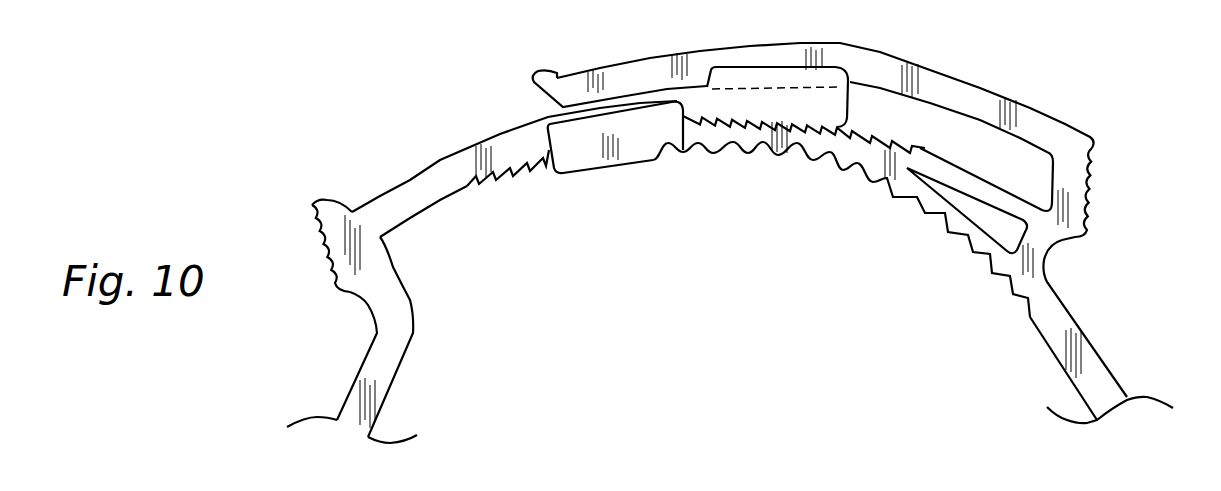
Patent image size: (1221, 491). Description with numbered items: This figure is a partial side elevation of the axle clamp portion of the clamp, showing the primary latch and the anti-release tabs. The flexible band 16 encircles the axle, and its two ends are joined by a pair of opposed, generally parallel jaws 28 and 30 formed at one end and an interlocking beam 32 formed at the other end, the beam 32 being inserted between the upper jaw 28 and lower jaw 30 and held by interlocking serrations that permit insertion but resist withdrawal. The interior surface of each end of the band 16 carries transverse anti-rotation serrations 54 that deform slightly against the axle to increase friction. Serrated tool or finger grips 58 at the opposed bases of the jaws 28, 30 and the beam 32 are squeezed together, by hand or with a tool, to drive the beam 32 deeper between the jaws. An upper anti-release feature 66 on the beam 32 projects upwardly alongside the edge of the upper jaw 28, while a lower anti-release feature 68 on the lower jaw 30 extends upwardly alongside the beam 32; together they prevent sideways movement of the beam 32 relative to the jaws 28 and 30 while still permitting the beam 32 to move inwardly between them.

The flexible band portion 16 is at (403, 365).
The upper jaw 28 is at (573, 80).
The lower jaw 30 is at (841, 216).
The interlocking beam 32 is at (453, 150).
The anti-rotation serrations 54 is at (730, 155).
The serrated finger grips 58 is at (327, 260).
The upper anti-release feature 66 is at (777, 78).
The lower anti-release feature 68 is at (643, 137).